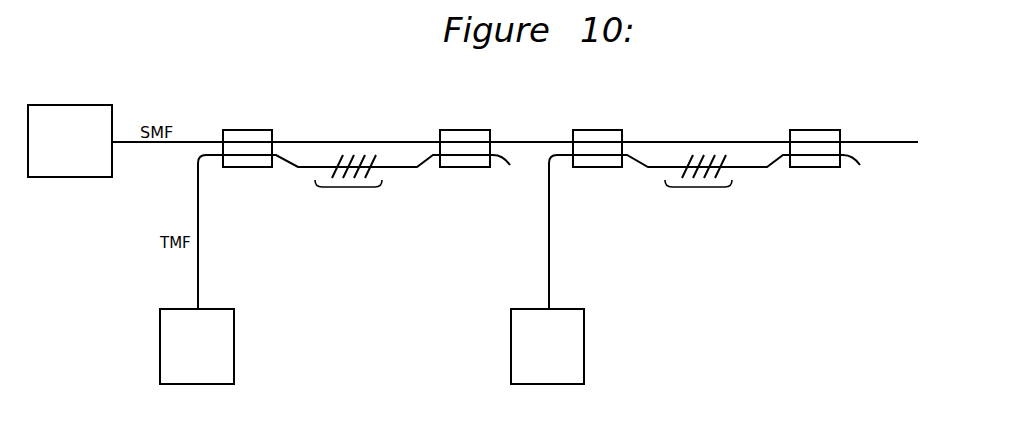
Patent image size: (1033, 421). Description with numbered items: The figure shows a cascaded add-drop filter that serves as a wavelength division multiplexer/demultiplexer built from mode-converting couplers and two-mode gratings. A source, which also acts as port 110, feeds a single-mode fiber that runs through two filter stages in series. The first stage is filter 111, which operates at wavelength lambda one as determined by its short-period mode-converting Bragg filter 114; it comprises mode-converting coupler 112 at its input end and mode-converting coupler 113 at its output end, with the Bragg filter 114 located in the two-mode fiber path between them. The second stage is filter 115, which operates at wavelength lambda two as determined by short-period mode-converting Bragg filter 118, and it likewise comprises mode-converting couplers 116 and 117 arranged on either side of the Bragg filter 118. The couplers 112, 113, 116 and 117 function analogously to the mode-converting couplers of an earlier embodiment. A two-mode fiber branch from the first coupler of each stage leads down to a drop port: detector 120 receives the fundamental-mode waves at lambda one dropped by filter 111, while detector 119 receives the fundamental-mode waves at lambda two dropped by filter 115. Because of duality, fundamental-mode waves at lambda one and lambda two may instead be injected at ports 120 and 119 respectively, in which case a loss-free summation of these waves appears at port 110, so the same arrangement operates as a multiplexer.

The port 110 is at (48, 97).
The filter 111 is at (522, 102).
The mode-converting coupler 112 is at (237, 119).
The mode-converting coupler 113 is at (443, 124).
The short-period mode-converting Bragg filter 114 is at (362, 187).
The filter 115 is at (883, 105).
The mode-converting coupler 116 is at (588, 120).
The mode-converting coupler 117 is at (793, 123).
The short-period mode-converting Bragg filter 118 is at (712, 187).
The detector 119 is at (524, 305).
The detector 120 is at (174, 305).